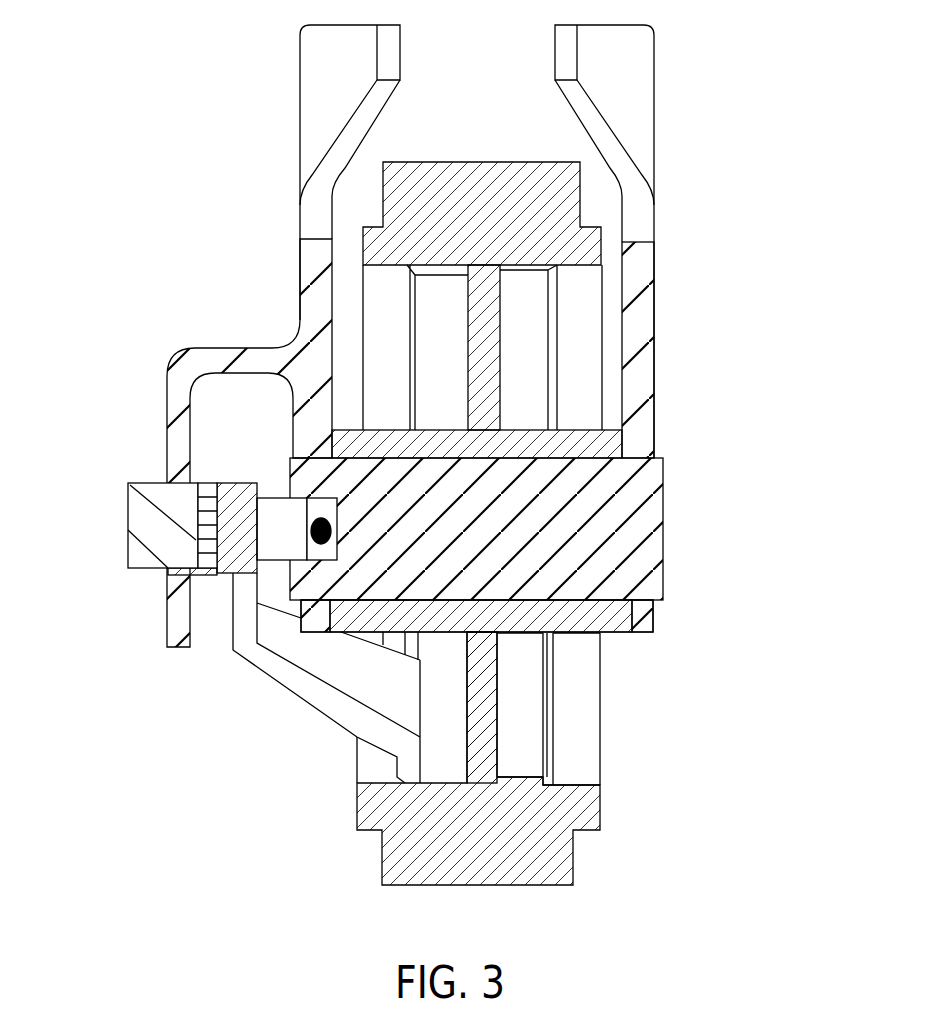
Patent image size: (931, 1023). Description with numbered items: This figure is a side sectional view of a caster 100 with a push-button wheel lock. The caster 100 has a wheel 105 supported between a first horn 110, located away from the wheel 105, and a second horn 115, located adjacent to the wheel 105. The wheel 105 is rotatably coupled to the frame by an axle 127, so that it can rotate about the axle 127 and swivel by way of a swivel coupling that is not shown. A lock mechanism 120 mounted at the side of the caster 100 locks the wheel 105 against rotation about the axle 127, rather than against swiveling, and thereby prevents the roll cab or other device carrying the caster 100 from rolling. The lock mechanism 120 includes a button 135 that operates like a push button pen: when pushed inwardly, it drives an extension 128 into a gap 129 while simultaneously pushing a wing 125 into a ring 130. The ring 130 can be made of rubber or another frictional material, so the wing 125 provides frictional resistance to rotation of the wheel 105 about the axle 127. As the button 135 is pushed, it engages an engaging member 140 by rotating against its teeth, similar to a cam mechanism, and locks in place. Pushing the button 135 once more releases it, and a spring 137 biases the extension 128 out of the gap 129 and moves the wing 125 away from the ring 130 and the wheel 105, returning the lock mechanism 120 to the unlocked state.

The caster 100 is at (772, 225).
The wheel 105 is at (560, 860).
The first horn 110 is at (315, 73).
The second horn 115 is at (638, 80).
The lock mechanism 120 is at (112, 514).
The wing 125 is at (253, 652).
The axle 127 is at (622, 478).
The extension 128 is at (275, 517).
The gap 129 is at (321, 548).
The ring 130 is at (440, 775).
The button 135 is at (130, 562).
The spring 137 is at (308, 497).
The engaging member 140 is at (203, 513).